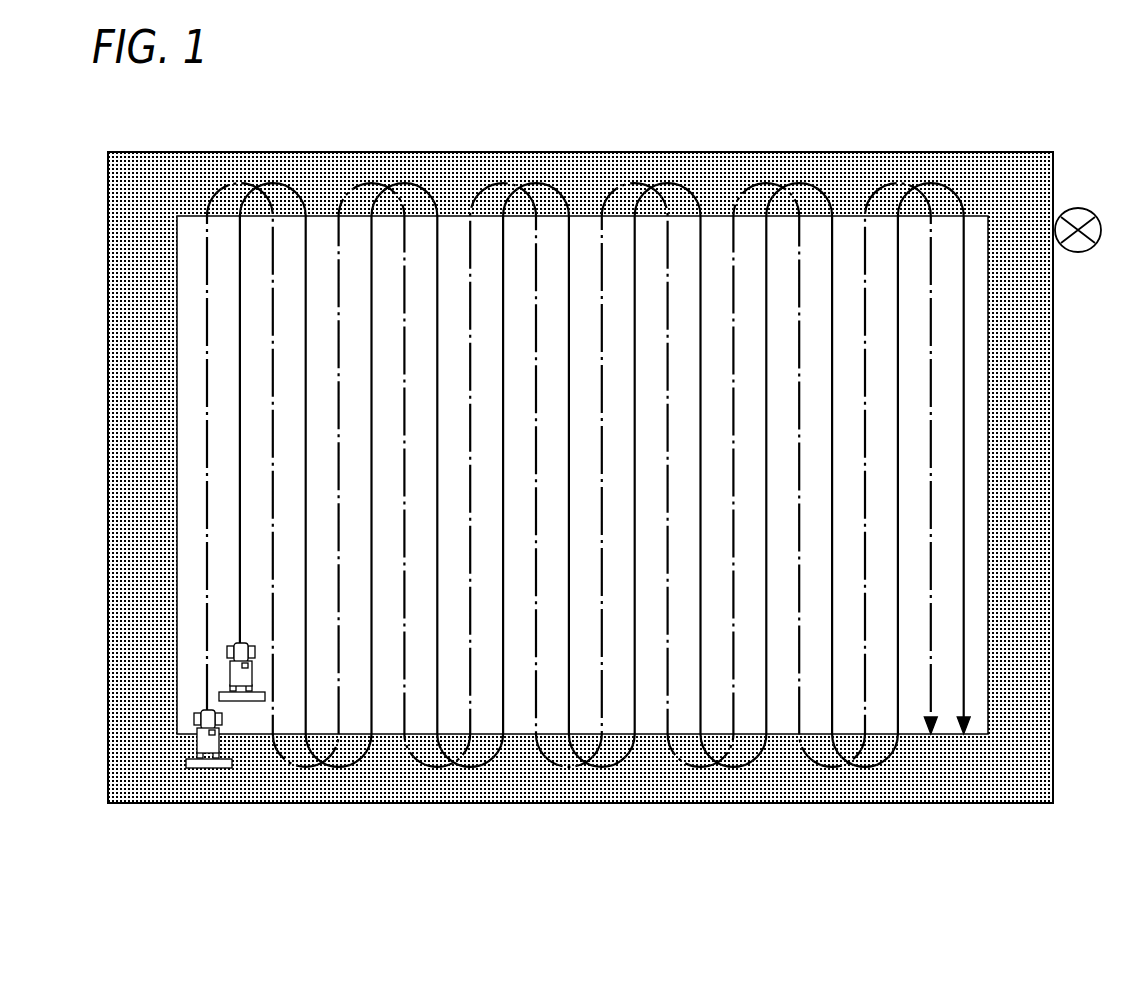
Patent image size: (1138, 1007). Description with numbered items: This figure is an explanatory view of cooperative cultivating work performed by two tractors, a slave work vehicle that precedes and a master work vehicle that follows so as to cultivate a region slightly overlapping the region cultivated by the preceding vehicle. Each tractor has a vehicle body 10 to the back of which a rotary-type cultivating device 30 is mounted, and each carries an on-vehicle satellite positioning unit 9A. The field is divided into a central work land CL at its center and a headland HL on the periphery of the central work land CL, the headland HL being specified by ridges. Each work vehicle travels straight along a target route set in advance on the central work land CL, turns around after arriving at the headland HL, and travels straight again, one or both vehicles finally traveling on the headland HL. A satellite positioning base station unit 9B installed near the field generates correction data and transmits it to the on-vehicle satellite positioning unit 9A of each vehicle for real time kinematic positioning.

The vehicle body 10 is at (199, 719).
The on-vehicle satellite positioning unit 9A is at (207, 733).
The satellite positioning base station unit 9B is at (1080, 208).
The cultivating device 30 is at (245, 701).
The headland HL is at (1017, 331).
The central work land CL is at (945, 443).